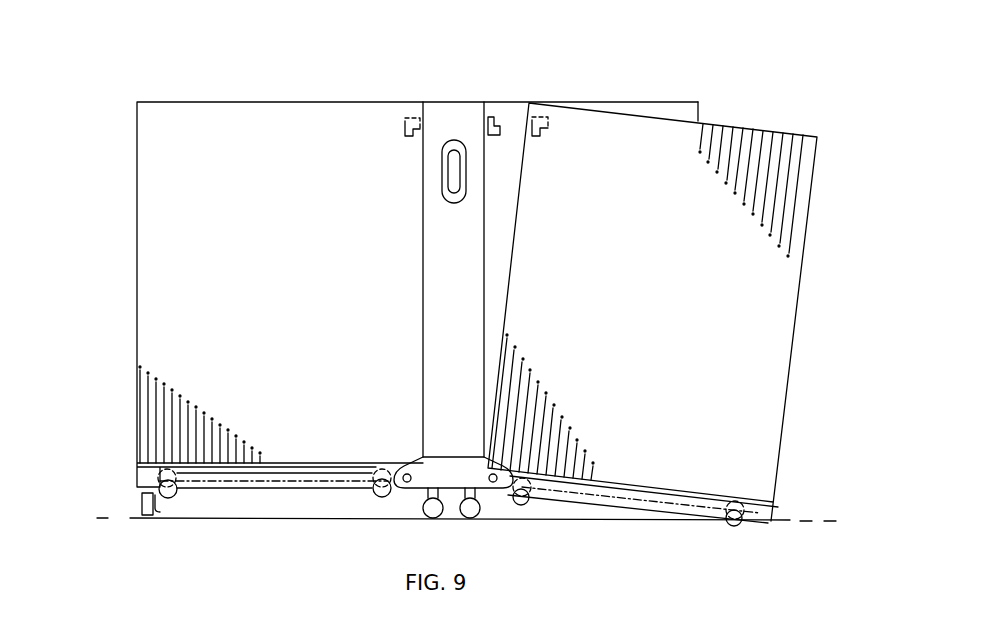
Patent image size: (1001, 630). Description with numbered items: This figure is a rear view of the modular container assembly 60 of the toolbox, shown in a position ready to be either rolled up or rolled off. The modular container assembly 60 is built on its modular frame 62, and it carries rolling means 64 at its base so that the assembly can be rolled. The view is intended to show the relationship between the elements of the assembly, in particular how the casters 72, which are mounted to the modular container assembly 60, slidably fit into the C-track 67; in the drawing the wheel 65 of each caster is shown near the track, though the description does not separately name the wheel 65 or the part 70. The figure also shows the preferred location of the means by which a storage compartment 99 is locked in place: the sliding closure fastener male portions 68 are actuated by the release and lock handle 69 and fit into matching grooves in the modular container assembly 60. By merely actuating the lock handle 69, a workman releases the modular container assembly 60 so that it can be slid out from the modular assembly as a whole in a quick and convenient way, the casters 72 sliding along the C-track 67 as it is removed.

The modular container assembly 60 is at (384, 96).
The modular frame 62 is at (440, 233).
The rolling means 64 is at (143, 500).
The wheel 65 is at (170, 498).
The C-track 67 is at (307, 476).
The closure fastener male portions 68 is at (400, 125).
The release and lock handle 69 is at (448, 170).
The hook connector 70 is at (553, 131).
The casters 72 is at (158, 476).
The storage compartment 99 is at (302, 316).